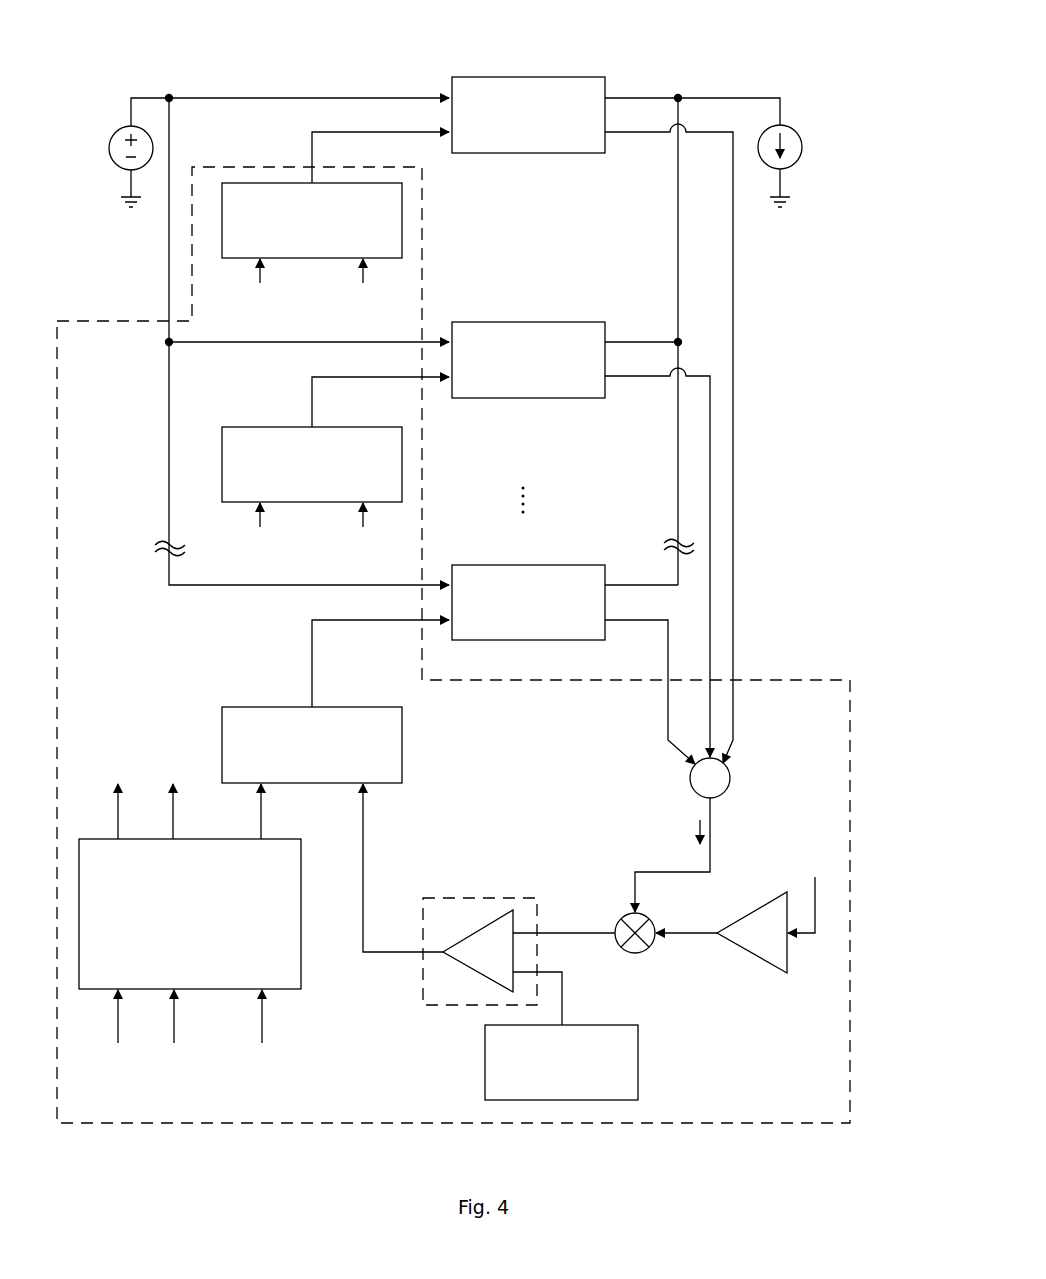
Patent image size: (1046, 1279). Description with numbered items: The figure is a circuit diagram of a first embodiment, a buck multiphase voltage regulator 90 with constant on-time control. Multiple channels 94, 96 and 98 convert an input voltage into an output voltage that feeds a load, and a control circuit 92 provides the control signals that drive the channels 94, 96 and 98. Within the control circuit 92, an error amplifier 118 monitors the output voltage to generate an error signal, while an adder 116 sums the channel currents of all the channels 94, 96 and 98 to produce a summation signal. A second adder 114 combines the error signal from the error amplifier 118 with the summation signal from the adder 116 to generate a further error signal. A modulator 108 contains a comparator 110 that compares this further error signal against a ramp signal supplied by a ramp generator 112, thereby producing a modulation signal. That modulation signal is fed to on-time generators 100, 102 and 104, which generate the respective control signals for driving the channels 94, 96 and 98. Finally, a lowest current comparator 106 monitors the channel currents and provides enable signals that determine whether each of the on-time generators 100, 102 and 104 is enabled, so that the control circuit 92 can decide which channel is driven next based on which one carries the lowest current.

The buck multiphase voltage regulator 90 is at (801, 60).
The control circuit 92 is at (116, 321).
The channel 94 is at (528, 77).
The channel 96 is at (528, 322).
The channel 98 is at (528, 565).
The on-time generator 100 is at (402, 221).
The on-time generator 102 is at (402, 464).
The on-time generator 104 is at (402, 746).
The lowest current comparator 106 is at (301, 912).
The modulator 108 is at (468, 1006).
The comparator 110 is at (477, 926).
The ramp generator 112 is at (638, 1060).
The adder 114 is at (614, 917).
The adder 116 is at (690, 775).
The error amplifier 118 is at (748, 958).